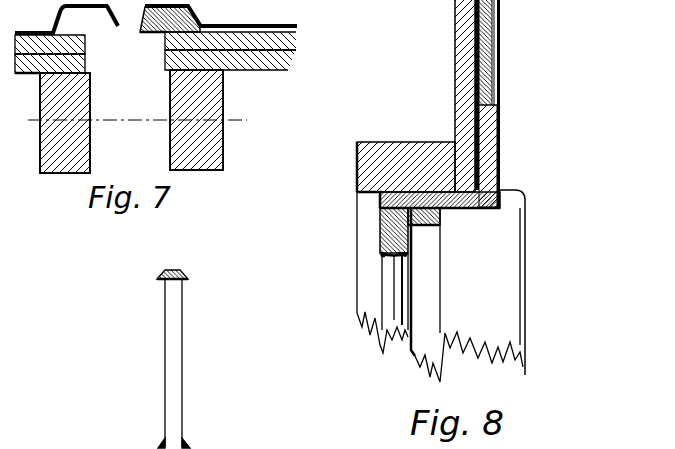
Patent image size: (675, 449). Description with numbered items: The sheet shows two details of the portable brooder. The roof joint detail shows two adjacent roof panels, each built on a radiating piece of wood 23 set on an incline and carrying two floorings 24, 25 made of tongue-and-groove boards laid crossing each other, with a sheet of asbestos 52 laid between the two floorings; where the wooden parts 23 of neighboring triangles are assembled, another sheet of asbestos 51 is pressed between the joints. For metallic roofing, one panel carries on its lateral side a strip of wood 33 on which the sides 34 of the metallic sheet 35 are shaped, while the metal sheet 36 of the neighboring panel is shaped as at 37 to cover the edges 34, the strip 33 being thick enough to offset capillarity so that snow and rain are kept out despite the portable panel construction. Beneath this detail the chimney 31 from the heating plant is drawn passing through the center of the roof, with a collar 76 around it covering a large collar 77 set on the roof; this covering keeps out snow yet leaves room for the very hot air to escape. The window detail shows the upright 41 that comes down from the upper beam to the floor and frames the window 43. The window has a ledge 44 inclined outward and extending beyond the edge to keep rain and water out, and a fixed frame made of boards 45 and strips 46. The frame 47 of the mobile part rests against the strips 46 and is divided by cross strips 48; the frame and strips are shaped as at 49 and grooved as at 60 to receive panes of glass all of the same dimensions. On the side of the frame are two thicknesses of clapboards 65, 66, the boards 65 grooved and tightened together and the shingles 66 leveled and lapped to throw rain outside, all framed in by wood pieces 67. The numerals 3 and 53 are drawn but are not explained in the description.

In FIG. 8, the inner sleeve 3 is at (397, 313).
In FIG. 7, the pieces of wood 23 is at (131, 121).
In FIG. 7, the flooring 24 is at (283, 49).
In FIG. 7, the flooring 25 is at (284, 53).
In FIG. 7, the chimney 31 is at (176, 405).
In FIG. 7, the strip of wood 33 is at (161, 22).
In FIG. 7, the sides of the metallic sheet 34 is at (198, 17).
In FIG. 7, the metallic sheet 35 is at (264, 21).
In FIG. 7, the metal sheet 36 is at (64, 23).
In FIG. 7, the shaped portion of metal sheet 37 is at (107, 12).
In FIG. 8, the upright 41 is at (406, 167).
In FIG. 8, the window 43 is at (396, 288).
In FIG. 8, the ledge 44 is at (470, 286).
In FIG. 8, the boards 45 is at (503, 166).
In FIG. 8, the strips 46 is at (441, 224).
In FIG. 8, the frame of the mobile part of the window 47 is at (384, 230).
In FIG. 8, the cross strips 48 is at (396, 302).
In FIG. 8, the shaped portion 49 is at (382, 256).
In FIG. 7, the sheet of asbestos 51 is at (170, 100).
In FIG. 7, the sheet of asbestos 52 is at (295, 50).
In FIG. 8, the lower insert 53 is at (497, 118).
In FIG. 8, the groove 60 is at (402, 251).
In FIG. 8, the clapboards 65 is at (468, 80).
In FIG. 8, the shingles 66 is at (488, 89).
In FIG. 8, the wood pieces 67 is at (500, 147).
In FIG. 7, the collar 76 is at (186, 442).
In FIG. 7, the large collar 77 is at (211, 442).